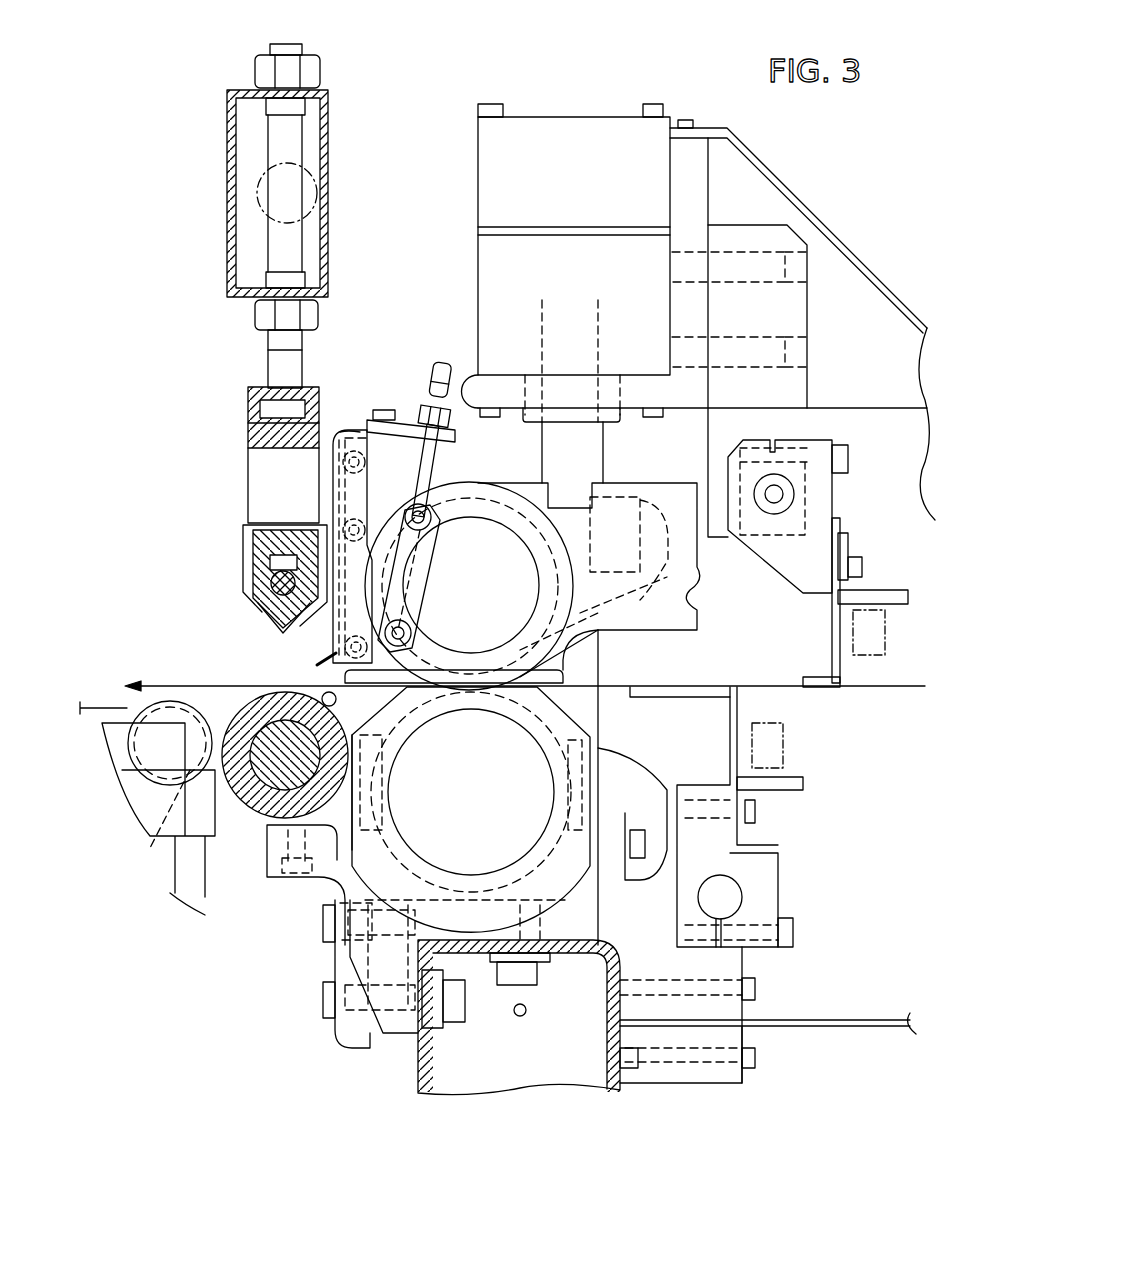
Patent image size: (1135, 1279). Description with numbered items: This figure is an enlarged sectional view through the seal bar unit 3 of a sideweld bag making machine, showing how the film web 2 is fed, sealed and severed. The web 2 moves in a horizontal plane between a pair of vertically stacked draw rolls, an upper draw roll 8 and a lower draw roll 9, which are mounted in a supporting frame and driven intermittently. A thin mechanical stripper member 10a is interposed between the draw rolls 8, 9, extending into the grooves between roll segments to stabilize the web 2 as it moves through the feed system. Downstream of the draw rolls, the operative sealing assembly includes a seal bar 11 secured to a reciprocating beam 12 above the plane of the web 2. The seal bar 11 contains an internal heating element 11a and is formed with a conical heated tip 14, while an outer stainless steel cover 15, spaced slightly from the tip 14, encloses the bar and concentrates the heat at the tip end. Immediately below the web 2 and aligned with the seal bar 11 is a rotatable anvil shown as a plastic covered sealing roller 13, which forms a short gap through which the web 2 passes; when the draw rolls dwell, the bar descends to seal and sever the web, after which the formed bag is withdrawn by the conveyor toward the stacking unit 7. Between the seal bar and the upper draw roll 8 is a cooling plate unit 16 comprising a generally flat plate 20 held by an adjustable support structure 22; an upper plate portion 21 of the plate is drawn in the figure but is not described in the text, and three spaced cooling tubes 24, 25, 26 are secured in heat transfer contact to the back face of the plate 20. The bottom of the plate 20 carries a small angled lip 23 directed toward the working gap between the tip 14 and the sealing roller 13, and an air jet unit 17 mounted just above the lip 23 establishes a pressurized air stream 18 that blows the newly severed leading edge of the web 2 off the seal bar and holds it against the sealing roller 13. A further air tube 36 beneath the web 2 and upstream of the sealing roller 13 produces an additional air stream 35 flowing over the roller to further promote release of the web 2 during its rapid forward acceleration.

The web 2 is at (167, 683).
The seal bar unit 3 is at (429, 130).
The stacking unit 7 is at (105, 703).
The upper draw roll 8 is at (522, 500).
The lower draw roll 9 is at (547, 720).
The stripper member 10a is at (393, 703).
The seal bar 11 is at (236, 565).
The internal heating element 11a is at (272, 588).
The reciprocating beam 12 is at (330, 163).
The sealing roller 13 is at (252, 812).
The conical heated tip 14 is at (280, 628).
The outer stainless steel cover 15 is at (243, 528).
The cooling plate unit 16 is at (382, 406).
The air jet unit 17 is at (413, 606).
The air stream 18 is at (318, 657).
The flat plate 20 is at (333, 500).
The lever top 21 is at (358, 430).
The adjustable support structure 22 is at (445, 358).
The angled lip 23 is at (313, 647).
The cooling tube 24 is at (343, 461).
The cooling tube 25 is at (375, 515).
The cooling tube 26 is at (418, 578).
The further air stream 35 is at (258, 697).
The air tube 36 is at (337, 703).